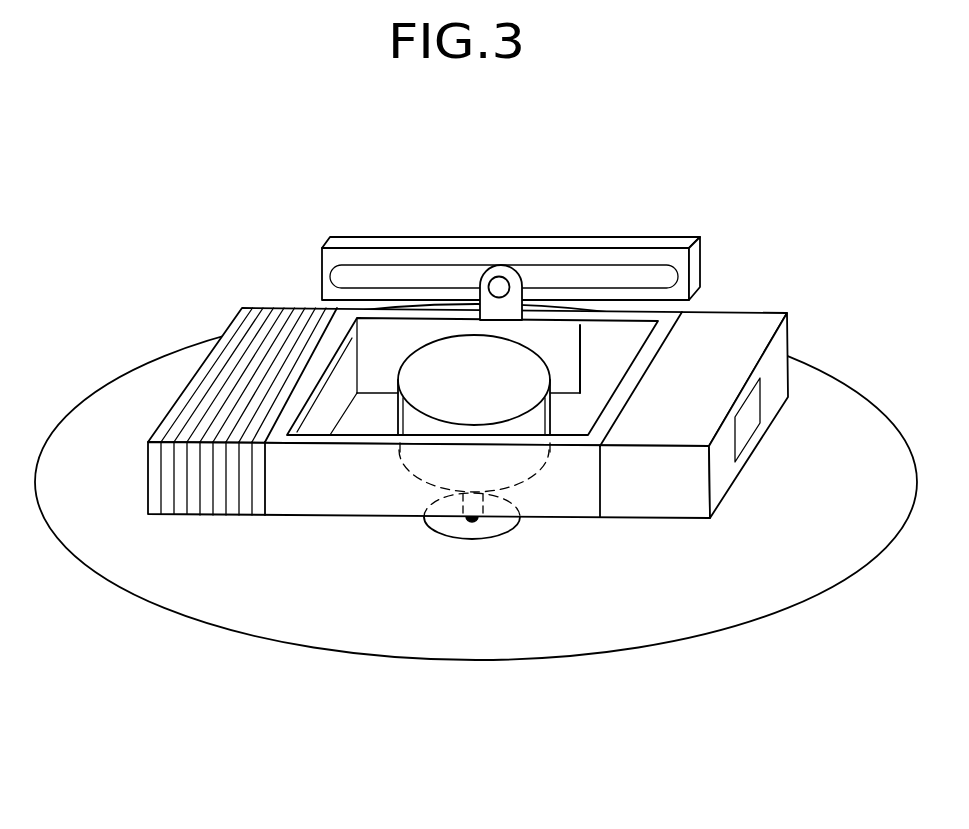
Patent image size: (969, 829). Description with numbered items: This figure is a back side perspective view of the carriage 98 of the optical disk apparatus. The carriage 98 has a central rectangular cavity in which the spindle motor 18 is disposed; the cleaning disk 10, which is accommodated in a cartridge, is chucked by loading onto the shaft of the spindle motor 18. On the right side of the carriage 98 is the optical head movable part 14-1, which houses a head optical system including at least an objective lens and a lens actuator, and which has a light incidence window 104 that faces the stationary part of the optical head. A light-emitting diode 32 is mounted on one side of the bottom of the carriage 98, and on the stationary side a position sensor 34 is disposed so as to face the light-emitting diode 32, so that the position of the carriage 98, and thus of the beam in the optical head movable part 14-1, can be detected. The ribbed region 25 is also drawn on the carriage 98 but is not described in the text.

The cleaning disk 10 is at (307, 628).
The optical head movable part 14-1 is at (640, 507).
The spindle motor 18 is at (427, 367).
The ribbed block 25 is at (253, 338).
The light-emitting diode 32 is at (500, 285).
The position sensor 34 is at (627, 273).
The carriage 98 is at (280, 502).
The light incidence window 104 is at (753, 400).